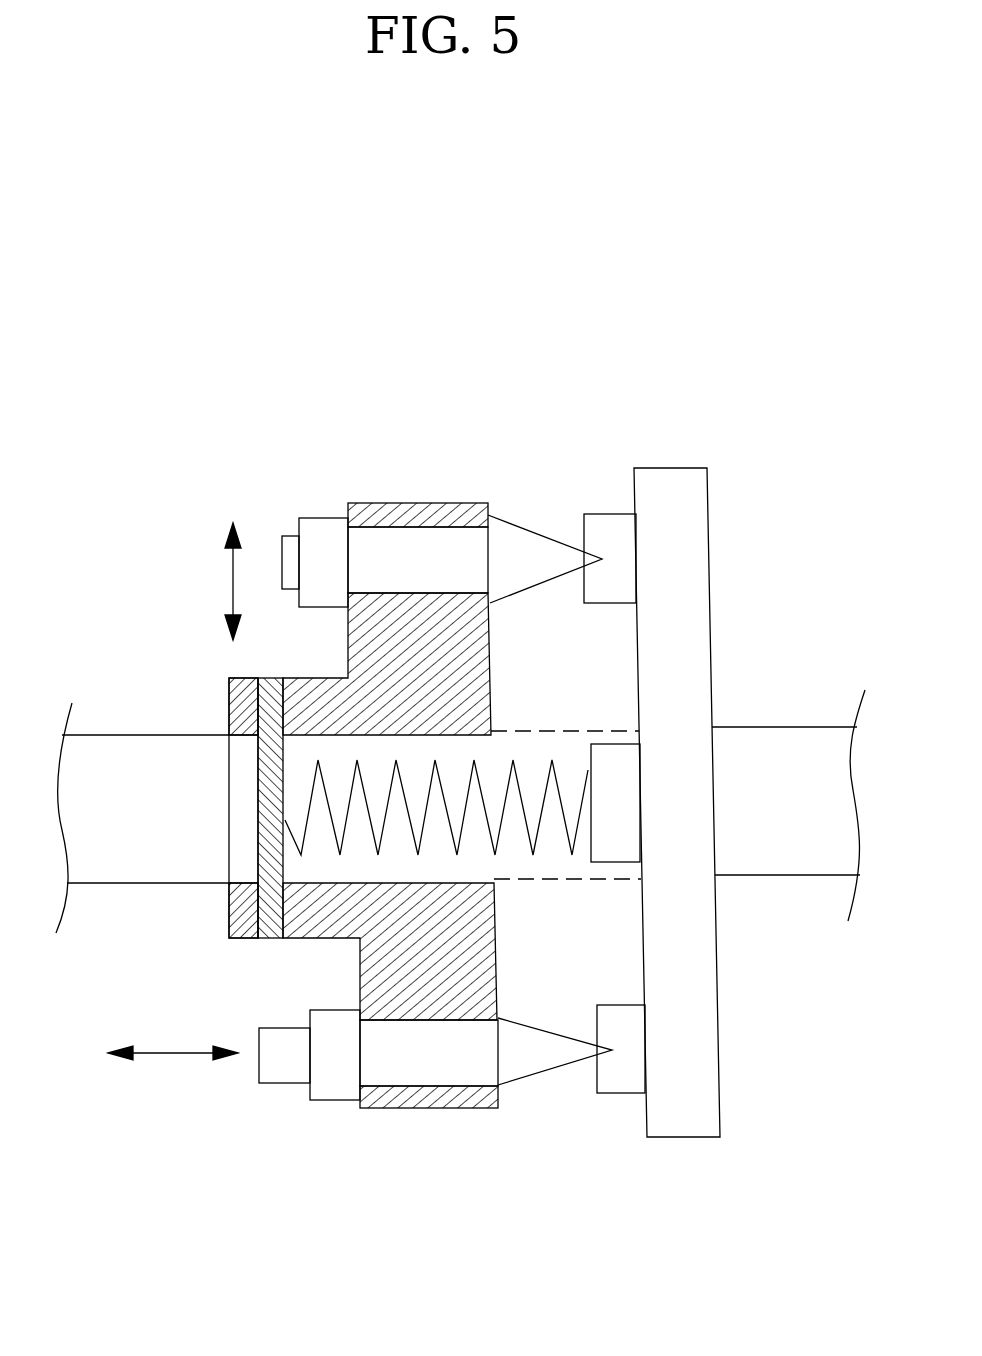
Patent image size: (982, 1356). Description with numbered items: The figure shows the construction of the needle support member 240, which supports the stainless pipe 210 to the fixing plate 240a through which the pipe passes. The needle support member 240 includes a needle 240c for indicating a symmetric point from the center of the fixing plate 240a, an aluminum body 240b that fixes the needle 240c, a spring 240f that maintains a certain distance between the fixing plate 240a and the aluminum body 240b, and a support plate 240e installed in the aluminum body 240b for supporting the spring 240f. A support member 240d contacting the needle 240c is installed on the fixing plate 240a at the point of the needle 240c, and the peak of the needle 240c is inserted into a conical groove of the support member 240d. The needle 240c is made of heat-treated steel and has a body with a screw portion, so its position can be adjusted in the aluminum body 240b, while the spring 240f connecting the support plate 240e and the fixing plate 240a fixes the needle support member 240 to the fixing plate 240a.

The needle support member 240 is at (464, 784).
The fixing plate 240a is at (663, 572).
The aluminum body 240b is at (441, 515).
The needle 240c is at (419, 553).
The support member 240d is at (627, 1070).
The support plate 240e is at (268, 790).
The spring 240f is at (517, 778).
The stainless pipe 210 is at (796, 835).